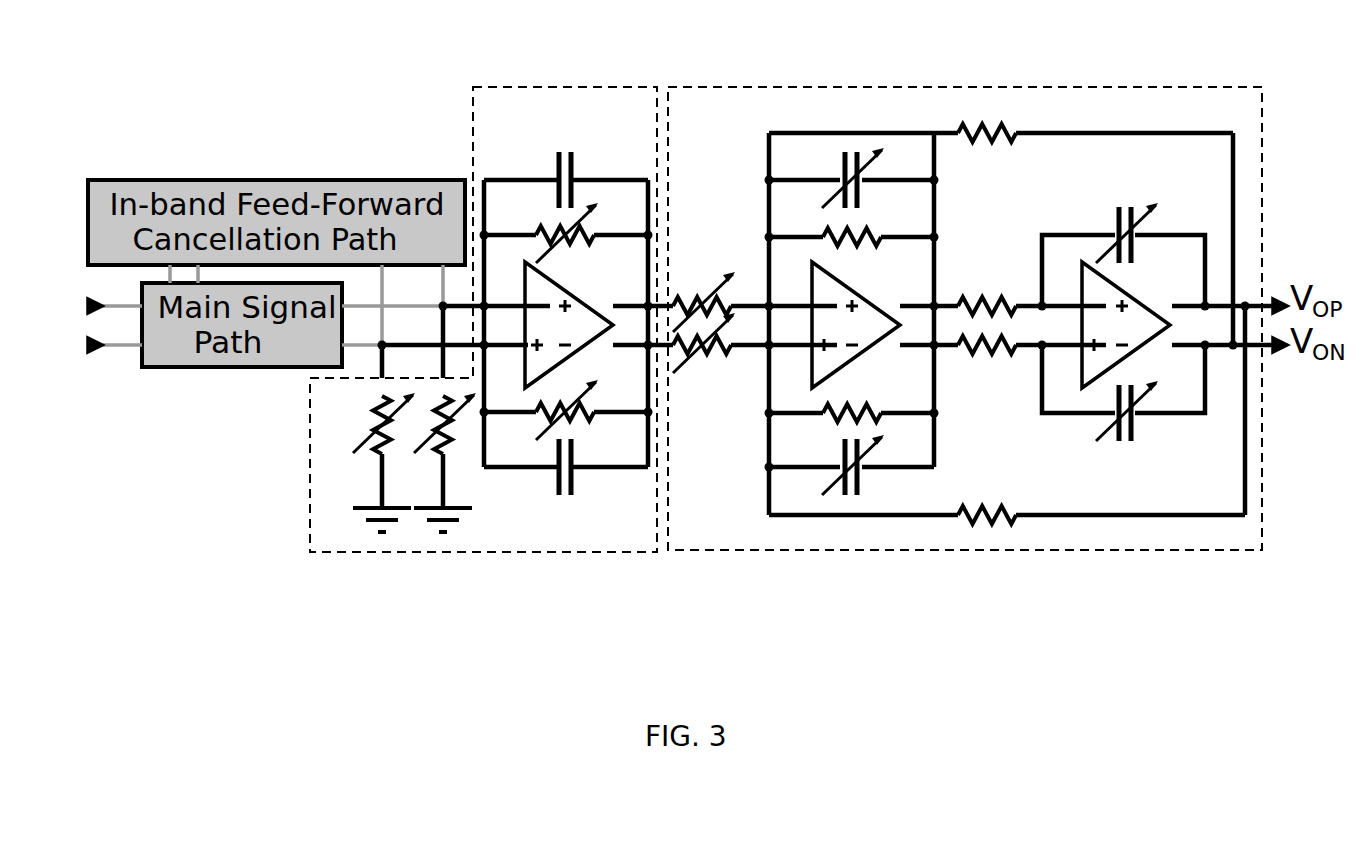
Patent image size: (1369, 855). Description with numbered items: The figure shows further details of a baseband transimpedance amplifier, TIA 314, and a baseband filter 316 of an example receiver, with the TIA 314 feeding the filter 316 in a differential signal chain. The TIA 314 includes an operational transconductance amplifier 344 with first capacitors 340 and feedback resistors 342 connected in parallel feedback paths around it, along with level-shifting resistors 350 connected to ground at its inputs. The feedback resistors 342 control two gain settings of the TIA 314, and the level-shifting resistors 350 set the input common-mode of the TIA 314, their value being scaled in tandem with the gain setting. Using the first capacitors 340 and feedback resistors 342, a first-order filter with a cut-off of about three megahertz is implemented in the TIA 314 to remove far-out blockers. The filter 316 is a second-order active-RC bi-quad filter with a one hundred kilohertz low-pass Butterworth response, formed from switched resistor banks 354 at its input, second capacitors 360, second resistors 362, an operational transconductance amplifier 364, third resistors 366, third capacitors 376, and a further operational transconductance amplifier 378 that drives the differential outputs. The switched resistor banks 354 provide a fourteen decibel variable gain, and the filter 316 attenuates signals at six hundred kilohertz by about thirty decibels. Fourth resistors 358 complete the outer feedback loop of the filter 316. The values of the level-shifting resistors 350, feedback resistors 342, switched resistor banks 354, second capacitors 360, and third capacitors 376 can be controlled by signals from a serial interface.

The TIA 314 is at (556, 88).
The filter 316 is at (908, 87).
The capacitors C1 340 is at (566, 147).
The feedback resistors RFB 342 is at (548, 218).
The operational transconductance amplifier 344 is at (533, 385).
The level-shifting resistors RLS 350 is at (333, 485).
The switched resistor banks R1 354 is at (712, 252).
The resistor R4 358 is at (1002, 112).
The capacitors C2 360 is at (882, 168).
The resistors R2 362 is at (900, 212).
The operational transconductance amplifier 364 is at (892, 312).
The resistors R3 366 is at (1012, 272).
The capacitors C3 376 is at (1132, 205).
The operational transconductance amplifier 378 is at (1128, 289).